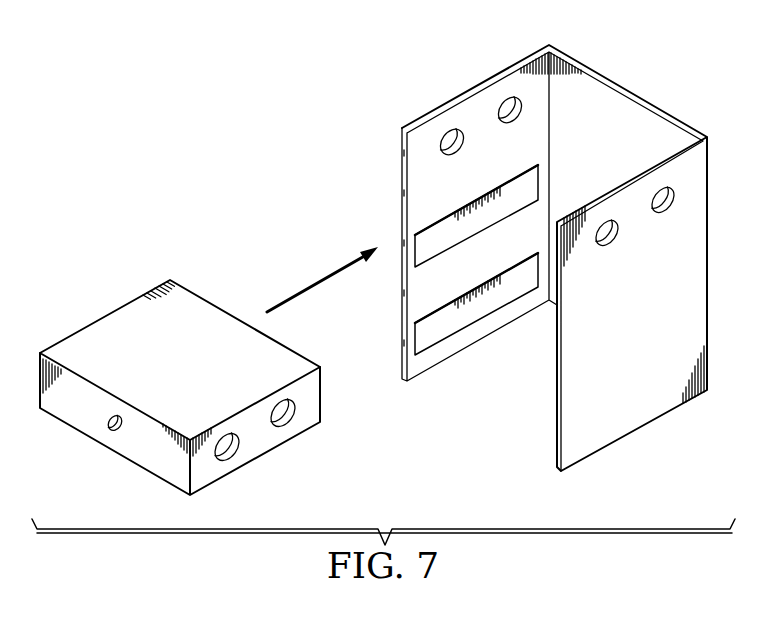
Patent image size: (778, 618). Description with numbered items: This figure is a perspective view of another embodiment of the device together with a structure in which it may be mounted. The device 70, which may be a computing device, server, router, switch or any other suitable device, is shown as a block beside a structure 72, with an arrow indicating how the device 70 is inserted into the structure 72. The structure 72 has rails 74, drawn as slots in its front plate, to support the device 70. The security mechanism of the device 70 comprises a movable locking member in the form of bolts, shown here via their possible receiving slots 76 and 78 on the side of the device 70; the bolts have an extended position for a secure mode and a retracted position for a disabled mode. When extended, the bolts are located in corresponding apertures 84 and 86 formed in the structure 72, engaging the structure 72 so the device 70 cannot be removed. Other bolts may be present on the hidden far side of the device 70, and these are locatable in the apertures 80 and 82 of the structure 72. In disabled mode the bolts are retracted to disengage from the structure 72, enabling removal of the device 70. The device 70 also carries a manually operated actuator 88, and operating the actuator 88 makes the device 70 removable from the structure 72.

The device 70 is at (103, 312).
The structure 72 is at (637, 437).
The rails 74 is at (437, 330).
The receiving slot 76 is at (240, 452).
The receiving slot 78 is at (298, 418).
The aperture 80 is at (458, 128).
The aperture 82 is at (513, 93).
The aperture 84 is at (617, 245).
The aperture 86 is at (672, 212).
The manually operated actuator 88 is at (103, 437).